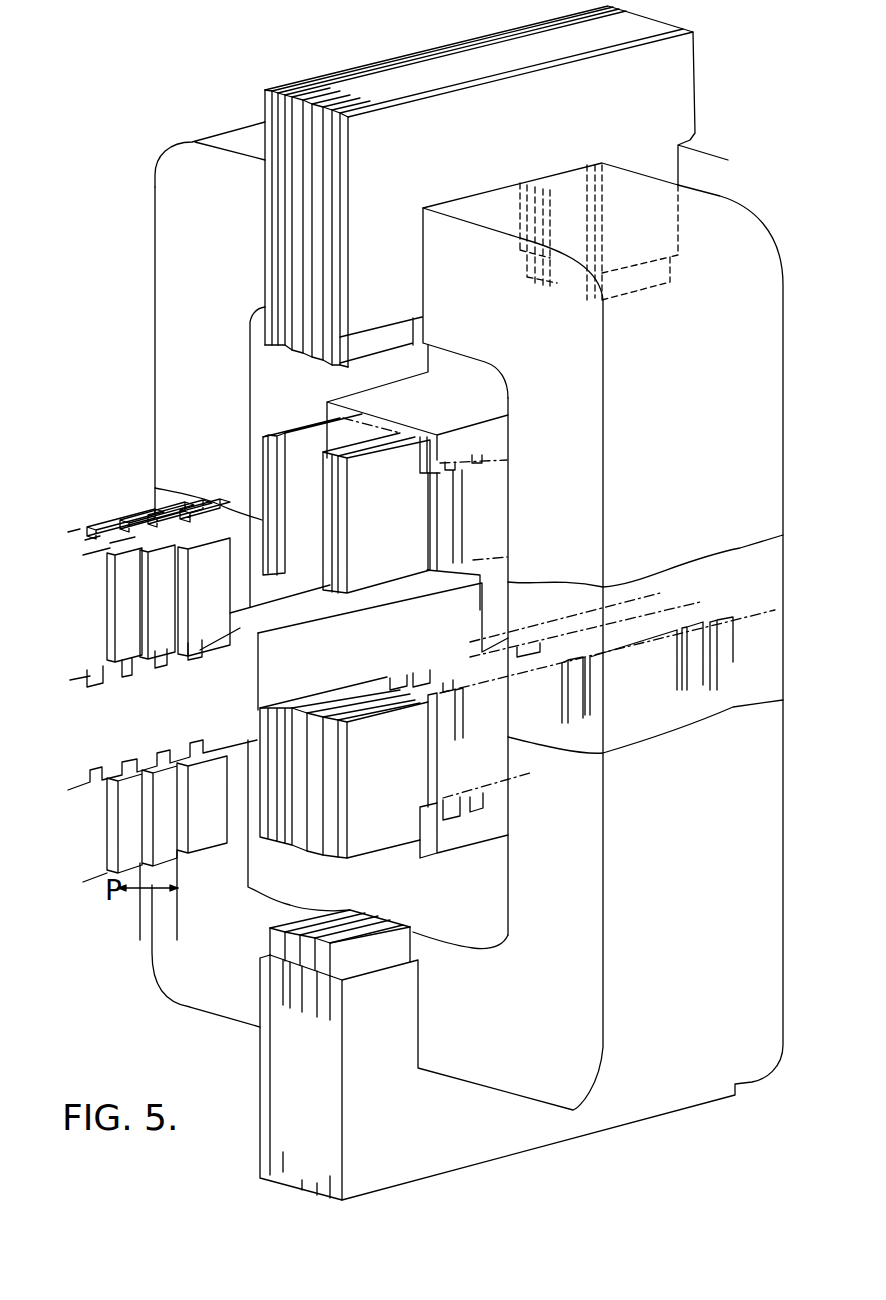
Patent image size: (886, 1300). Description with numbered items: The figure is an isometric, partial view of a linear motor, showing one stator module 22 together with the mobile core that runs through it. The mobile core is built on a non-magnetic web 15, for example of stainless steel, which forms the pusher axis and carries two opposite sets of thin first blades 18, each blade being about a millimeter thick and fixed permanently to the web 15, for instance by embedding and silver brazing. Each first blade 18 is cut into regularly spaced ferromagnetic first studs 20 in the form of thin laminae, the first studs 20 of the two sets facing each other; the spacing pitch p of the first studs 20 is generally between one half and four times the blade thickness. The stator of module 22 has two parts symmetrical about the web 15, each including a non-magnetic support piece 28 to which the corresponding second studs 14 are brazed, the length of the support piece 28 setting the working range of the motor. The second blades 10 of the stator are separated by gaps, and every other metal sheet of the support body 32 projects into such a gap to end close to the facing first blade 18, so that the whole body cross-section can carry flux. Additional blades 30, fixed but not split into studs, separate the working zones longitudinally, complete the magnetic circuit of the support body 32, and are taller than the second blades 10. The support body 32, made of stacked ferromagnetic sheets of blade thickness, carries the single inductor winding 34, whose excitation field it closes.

The second blades 10 is at (482, 505).
The second studs 14 is at (475, 553).
The non-magnetic web 15 is at (112, 687).
The first blades 18 is at (66, 527).
The first studs 20 is at (130, 522).
The module 22 is at (325, 70).
The support piece 28 is at (475, 830).
The additional blades 30 is at (285, 557).
The support body 32 is at (300, 92).
The inductor winding 34 is at (182, 165).